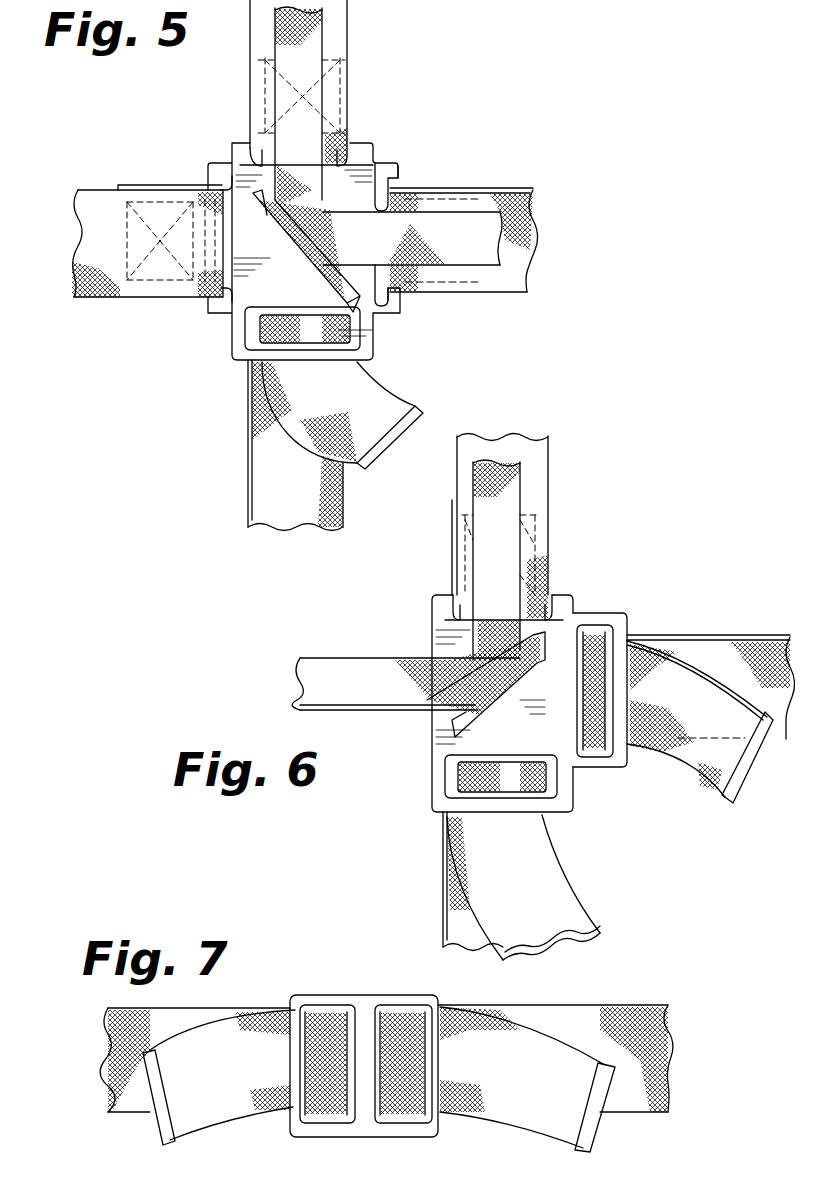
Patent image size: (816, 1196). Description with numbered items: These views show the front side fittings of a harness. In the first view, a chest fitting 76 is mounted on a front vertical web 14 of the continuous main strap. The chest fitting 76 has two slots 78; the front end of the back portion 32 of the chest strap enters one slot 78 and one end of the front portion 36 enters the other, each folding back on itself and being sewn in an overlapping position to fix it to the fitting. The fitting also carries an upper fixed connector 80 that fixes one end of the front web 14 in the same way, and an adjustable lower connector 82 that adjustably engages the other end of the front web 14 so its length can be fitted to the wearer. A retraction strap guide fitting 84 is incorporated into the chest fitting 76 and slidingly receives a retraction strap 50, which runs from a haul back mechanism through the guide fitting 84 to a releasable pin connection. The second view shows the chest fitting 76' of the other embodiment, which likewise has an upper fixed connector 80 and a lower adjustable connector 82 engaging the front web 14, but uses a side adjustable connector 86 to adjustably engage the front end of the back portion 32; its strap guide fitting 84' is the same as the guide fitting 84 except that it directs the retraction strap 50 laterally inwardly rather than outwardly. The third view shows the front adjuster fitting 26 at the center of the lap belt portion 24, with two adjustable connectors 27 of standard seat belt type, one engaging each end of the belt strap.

In FIG. 5, the front vertical web 14 is at (335, 32).
In FIG. 6, the front vertical web 14 is at (535, 462).
In FIG. 5, the retraction strap 50 is at (310, 95).
In FIG. 6, the retraction strap 50 is at (508, 505).
In FIG. 5, the chest fitting 76 is at (334, 236).
In FIG. 6, the chest fitting 76' is at (536, 675).
In FIG. 5, the slot 78 is at (385, 172).
In FIG. 5, the upper fixed connector 80 is at (238, 150).
In FIG. 6, the upper fixed connector 80 is at (440, 598).
In FIG. 5, the adjustable lower connector 82 is at (240, 362).
In FIG. 6, the adjustable lower connector 82 is at (570, 800).
In FIG. 5, the retraction strap guide fitting 84 is at (300, 251).
In FIG. 6, the strap guide fitting 84' is at (458, 690).
In FIG. 6, the side adjustable connector 86 is at (622, 612).
In FIG. 5, the front portion 36 is at (100, 285).
In FIG. 5, the back portion 32 is at (512, 283).
In FIG. 6, the back portion 32 is at (728, 657).
In FIG. 7, the front adjuster fitting 26 is at (319, 980).
In FIG. 7, the adjustable connector 27 is at (330, 1123).
In FIG. 7, the lap belt portion 24 is at (187, 1020).